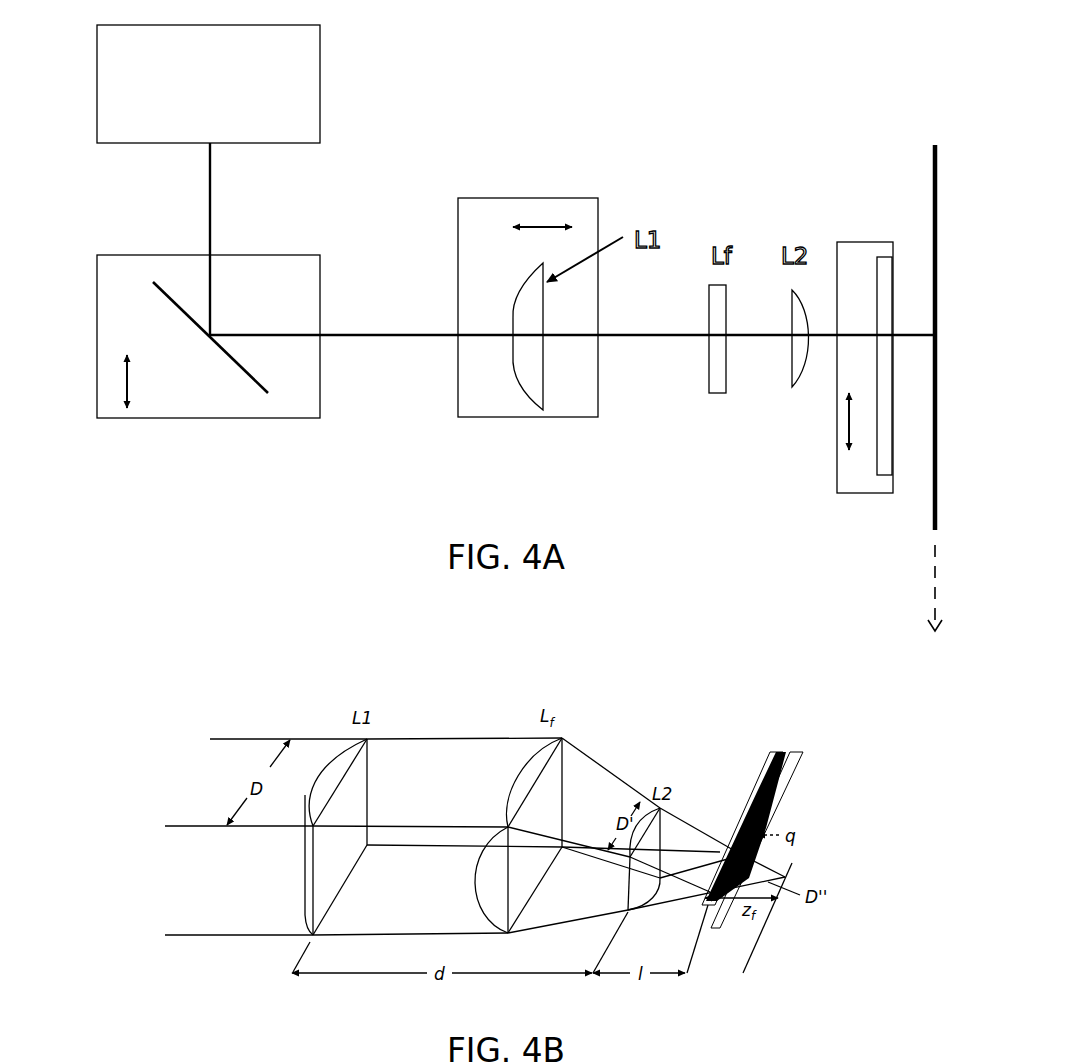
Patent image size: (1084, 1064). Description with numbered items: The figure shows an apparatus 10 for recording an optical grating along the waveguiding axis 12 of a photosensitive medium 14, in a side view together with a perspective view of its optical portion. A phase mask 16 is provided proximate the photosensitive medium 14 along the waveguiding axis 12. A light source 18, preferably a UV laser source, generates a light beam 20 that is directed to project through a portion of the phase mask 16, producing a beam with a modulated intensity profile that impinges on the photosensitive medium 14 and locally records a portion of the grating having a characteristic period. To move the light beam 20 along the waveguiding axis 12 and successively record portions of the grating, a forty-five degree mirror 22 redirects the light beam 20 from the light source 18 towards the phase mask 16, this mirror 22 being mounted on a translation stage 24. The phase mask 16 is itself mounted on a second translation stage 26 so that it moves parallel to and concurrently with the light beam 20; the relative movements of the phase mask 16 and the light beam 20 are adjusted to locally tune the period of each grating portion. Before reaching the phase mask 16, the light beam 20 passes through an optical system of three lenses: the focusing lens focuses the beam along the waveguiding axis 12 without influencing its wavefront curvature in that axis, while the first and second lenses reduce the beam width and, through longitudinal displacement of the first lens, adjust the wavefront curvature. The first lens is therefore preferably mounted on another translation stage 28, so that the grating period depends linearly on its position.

The apparatus 10 is at (587, 107).
The waveguiding axis 12 is at (932, 592).
The photosensitive medium 14 is at (933, 140).
The phase mask 16 is at (887, 253).
The light source 18 is at (212, 98).
The light beam 20 is at (375, 333).
The 45° mirror 22 is at (232, 363).
The translation stage 24 is at (155, 398).
The second translation stage 26 is at (847, 465).
The another translation stage 28 is at (498, 223).